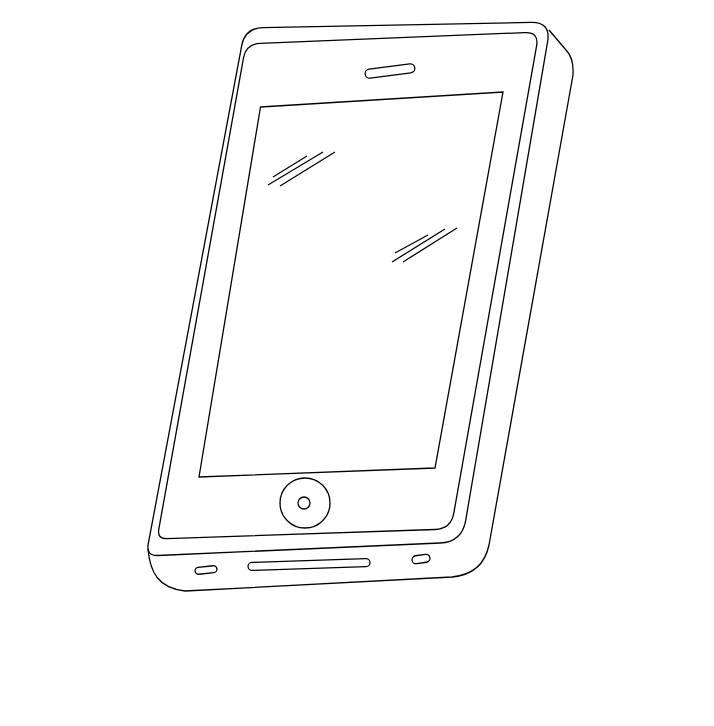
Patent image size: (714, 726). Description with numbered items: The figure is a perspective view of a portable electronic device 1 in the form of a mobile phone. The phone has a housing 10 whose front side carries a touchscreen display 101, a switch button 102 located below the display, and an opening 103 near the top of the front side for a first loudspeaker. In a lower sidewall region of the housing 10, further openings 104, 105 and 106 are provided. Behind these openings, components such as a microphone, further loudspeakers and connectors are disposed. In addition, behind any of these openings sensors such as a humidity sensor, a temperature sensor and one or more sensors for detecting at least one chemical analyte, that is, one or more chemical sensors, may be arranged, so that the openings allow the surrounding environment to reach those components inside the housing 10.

The portable electronic device 1 is at (103, 143).
The housing 10 is at (558, 286).
The touchscreen display 101 is at (348, 358).
The switch button 102 is at (290, 498).
The opening for a first loudspeaker 103 is at (366, 74).
The opening 104 is at (200, 572).
The opening 105 is at (350, 563).
The opening 106 is at (414, 565).